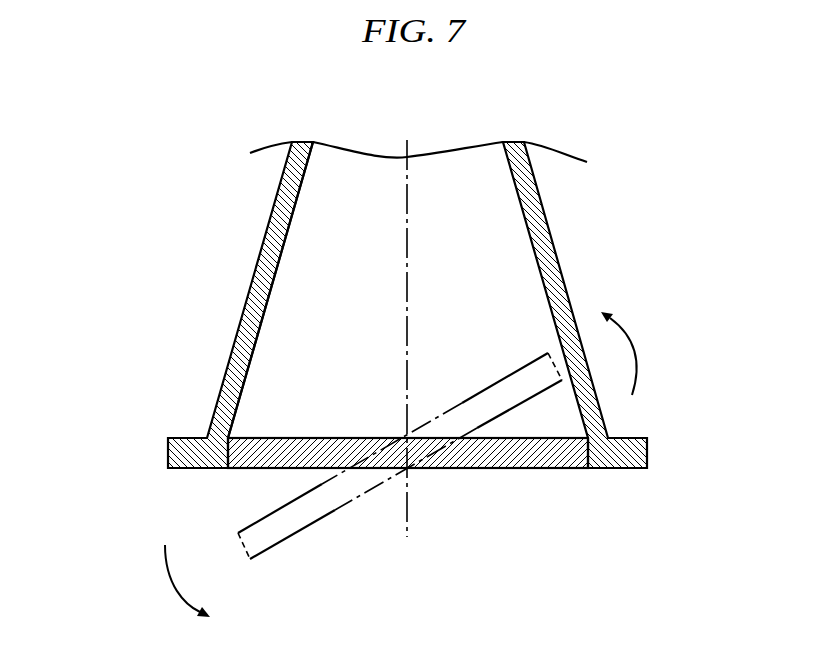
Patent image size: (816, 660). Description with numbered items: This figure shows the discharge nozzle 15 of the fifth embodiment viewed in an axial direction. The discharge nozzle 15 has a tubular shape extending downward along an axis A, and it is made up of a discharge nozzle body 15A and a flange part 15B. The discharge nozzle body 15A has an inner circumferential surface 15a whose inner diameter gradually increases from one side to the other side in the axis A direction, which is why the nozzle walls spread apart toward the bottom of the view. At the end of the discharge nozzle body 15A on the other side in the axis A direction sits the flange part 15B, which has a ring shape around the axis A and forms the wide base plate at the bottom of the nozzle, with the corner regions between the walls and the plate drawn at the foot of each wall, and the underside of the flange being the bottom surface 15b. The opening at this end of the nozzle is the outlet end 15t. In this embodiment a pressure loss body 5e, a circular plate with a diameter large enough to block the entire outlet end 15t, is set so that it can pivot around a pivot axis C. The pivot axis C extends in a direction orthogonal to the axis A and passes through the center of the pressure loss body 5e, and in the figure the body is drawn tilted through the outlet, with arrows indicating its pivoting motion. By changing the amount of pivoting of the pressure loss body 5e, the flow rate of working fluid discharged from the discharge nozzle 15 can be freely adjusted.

The discharge nozzle 15 is at (467, 379).
The discharge nozzle body 15A is at (560, 253).
The flange part 15B is at (638, 438).
The inner circumferential surface 15a is at (270, 300).
The outlet end 15t is at (207, 438).
The bottom surface 15b is at (229, 452).
The pressure loss body 5e is at (487, 468).
The axis A is at (407, 142).
The pivot axis C is at (407, 469).